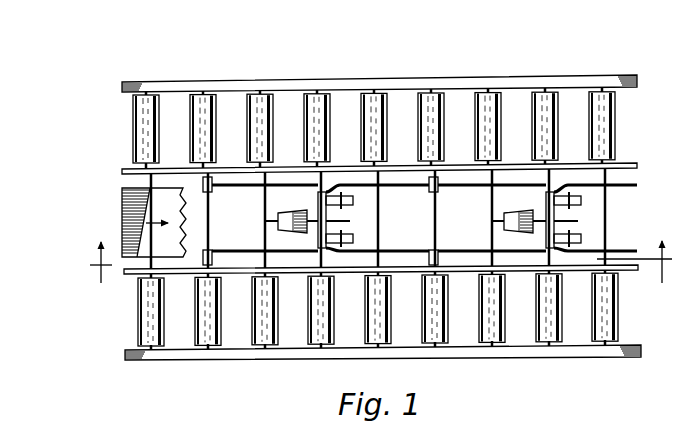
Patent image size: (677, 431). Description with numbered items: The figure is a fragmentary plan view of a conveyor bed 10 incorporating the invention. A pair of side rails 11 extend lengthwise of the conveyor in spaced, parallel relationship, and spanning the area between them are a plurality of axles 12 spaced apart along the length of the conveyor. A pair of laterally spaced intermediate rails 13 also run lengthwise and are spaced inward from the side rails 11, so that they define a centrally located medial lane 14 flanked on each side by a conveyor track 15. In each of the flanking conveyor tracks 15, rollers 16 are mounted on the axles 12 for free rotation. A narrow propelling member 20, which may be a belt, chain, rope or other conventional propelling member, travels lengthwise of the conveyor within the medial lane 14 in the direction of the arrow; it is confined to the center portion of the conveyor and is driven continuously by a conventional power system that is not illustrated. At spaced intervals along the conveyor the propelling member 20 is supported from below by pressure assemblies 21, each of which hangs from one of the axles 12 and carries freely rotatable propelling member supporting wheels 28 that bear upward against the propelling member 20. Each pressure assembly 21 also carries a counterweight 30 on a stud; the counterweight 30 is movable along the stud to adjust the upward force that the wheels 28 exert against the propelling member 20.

The conveyor bed 10 is at (130, 374).
The side rails 11 is at (128, 82).
The axles 12 is at (265, 240).
The intermediate rails 13 is at (131, 170).
The medial lane 14 is at (106, 193).
The conveyor tracks 15 is at (120, 106).
The rollers 16 is at (613, 122).
The propelling member 20 is at (124, 212).
The pressure assemblies 21 is at (192, 262).
The propelling member supporting wheel 28 is at (354, 238).
The counterweight 30 is at (283, 214).